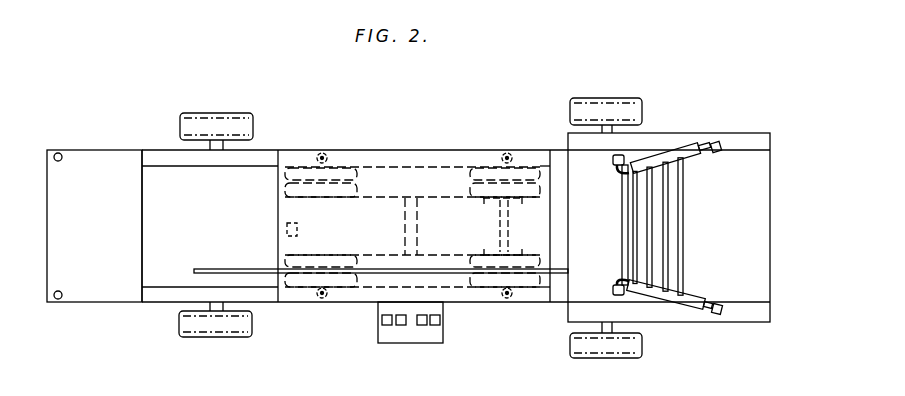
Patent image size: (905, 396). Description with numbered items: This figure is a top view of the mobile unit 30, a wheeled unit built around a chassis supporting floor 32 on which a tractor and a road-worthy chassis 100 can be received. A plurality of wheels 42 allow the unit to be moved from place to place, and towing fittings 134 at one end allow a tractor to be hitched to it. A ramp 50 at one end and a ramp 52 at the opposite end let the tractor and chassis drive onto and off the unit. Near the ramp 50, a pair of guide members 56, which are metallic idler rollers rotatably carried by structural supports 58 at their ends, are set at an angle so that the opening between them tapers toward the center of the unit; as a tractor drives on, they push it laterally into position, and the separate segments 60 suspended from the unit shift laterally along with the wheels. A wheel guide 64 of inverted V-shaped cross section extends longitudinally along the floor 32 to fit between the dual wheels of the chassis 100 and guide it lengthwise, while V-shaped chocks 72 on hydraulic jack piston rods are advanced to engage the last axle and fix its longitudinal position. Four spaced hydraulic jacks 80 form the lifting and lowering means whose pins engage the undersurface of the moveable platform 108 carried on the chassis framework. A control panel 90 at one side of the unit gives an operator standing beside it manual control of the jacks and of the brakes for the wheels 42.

The mobile unit 30 is at (150, 140).
The chassis supporting floor 32 is at (573, 245).
The wheels 42 is at (224, 111).
The ramp 50 is at (745, 225).
The ramp 52 is at (108, 289).
The guide members 56 is at (674, 152).
The structural supports 58 is at (625, 152).
The segments 60 is at (660, 200).
The wheel guide 64 is at (218, 268).
The V-shaped chocks 72 is at (485, 250).
The hydraulic jacks 80 is at (327, 151).
The control panel 90 is at (420, 343).
The road-worthy chassis 100 is at (350, 312).
The moveable platform 108 is at (413, 177).
The towing fittings 134 is at (63, 156).